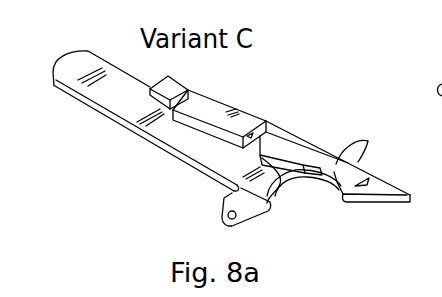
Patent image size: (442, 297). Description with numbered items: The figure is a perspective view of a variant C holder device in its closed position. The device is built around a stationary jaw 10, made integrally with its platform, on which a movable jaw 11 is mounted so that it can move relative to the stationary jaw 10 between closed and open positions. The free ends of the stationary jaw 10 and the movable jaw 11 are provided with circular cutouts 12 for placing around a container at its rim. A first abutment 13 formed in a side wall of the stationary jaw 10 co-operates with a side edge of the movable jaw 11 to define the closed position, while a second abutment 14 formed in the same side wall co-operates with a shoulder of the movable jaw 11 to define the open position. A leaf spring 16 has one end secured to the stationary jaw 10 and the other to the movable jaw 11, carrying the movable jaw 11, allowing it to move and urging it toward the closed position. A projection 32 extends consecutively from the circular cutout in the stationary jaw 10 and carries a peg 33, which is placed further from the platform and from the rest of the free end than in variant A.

The stationary jaw 10 is at (143, 130).
The movable jaw 11 is at (318, 154).
The circular cutouts 12 is at (345, 154).
The first abutment 13 is at (290, 138).
The second abutment 14 is at (286, 189).
The leaf spring 16 is at (235, 113).
The projection 32 is at (226, 195).
The peg 33 is at (228, 214).